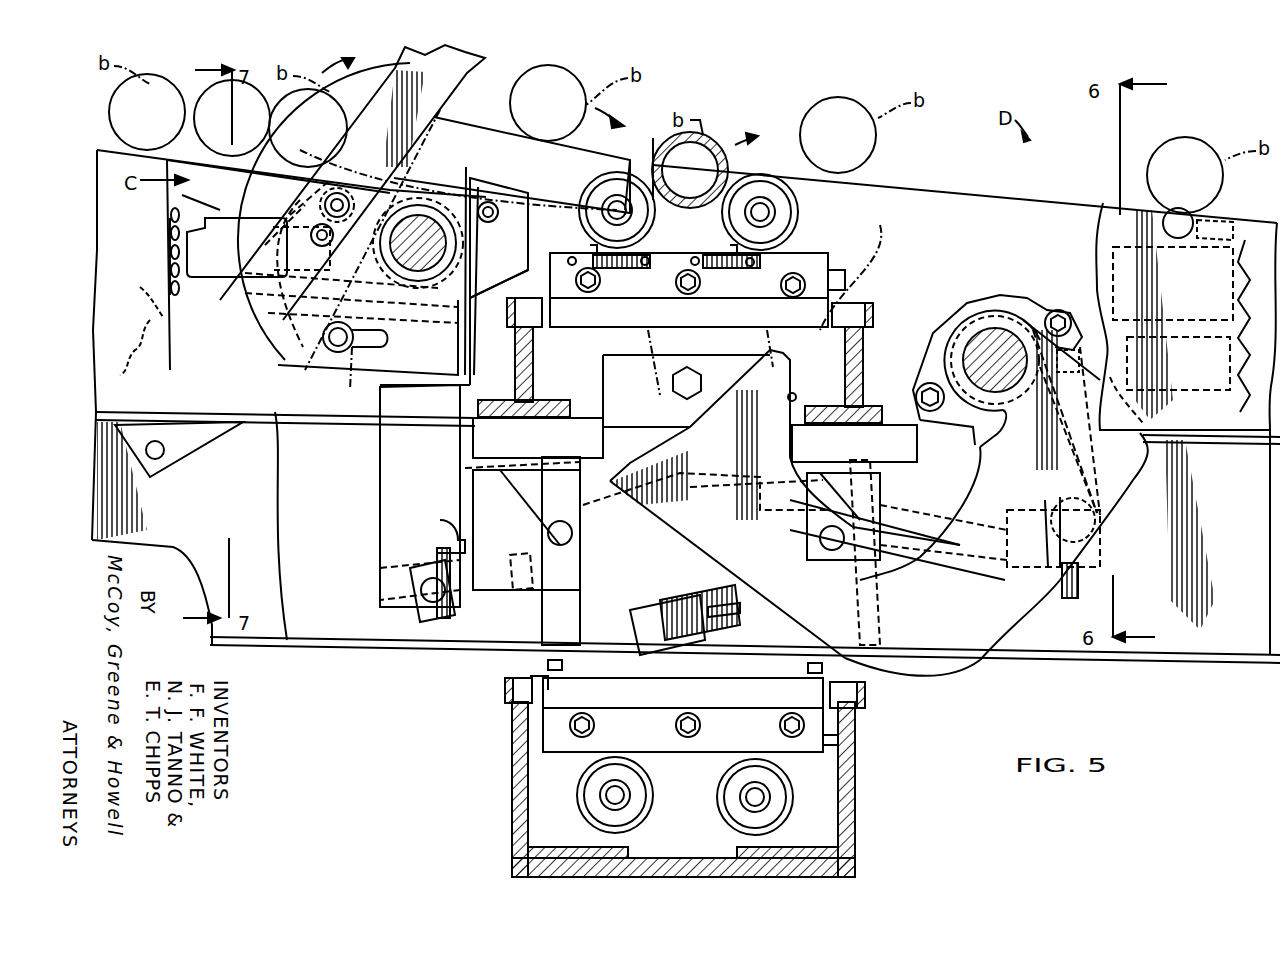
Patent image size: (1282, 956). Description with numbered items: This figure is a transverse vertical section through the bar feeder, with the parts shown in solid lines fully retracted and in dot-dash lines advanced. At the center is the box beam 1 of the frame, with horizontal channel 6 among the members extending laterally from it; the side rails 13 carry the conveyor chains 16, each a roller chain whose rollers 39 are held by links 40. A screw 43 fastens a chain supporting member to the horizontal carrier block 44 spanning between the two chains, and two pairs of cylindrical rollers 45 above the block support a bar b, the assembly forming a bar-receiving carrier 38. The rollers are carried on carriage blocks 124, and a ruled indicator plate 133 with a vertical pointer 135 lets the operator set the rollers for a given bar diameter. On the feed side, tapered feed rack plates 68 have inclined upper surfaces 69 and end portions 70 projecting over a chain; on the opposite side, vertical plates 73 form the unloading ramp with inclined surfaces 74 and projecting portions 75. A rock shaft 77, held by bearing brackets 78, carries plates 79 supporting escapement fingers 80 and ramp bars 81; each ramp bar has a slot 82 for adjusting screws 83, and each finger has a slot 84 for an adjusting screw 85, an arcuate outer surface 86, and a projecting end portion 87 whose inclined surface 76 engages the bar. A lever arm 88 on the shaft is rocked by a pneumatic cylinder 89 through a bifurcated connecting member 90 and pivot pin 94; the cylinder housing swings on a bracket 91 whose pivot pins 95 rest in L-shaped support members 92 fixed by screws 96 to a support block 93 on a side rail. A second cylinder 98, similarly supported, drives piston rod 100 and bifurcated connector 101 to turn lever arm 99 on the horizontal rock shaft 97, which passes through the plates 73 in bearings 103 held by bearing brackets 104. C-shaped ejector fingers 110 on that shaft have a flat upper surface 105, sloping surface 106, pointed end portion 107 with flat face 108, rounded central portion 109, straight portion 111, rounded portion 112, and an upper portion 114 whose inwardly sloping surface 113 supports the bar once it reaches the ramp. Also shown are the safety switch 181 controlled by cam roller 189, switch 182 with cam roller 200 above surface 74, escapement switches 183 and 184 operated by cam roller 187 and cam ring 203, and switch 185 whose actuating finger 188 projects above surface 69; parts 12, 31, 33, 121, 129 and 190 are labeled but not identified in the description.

The box beam 1 is at (860, 865).
The horizontal channel 6 is at (355, 648).
The side wall 12 is at (528, 780).
The side rail 13 is at (535, 380).
The chain 16 is at (548, 290).
The block 31 is at (603, 372).
The nut 33 is at (670, 398).
The bar-receiving carrier 38 is at (825, 771).
The roller 39 is at (535, 675).
The link 40 is at (505, 690).
The screw 43 is at (810, 672).
The carrier block 44 is at (698, 320).
The roller 45 is at (605, 196).
The feed rack plate 68 is at (100, 245).
The upper surface 69 is at (180, 140).
The end portion 70 is at (525, 220).
The vertical plate 73 is at (1015, 210).
The upper surface 74 is at (925, 190).
The portion 75 is at (880, 285).
The inclined upper surface 76 is at (310, 138).
The rock shaft 77 is at (418, 243).
The bearing bracket 78 is at (482, 265).
The plate 79 is at (462, 338).
The escapement finger 80 is at (295, 362).
The ramp bar 81 is at (402, 148).
The elongated slot 82 is at (315, 270).
The adjusting screw 83 is at (335, 190).
The elongated slot 84 is at (368, 338).
The adjusting screw 85 is at (355, 378).
The arcuate outer surface 86 is at (255, 218).
The projecting end portion 87 is at (250, 186).
The lever arm 88 is at (200, 455).
The pneumatic cylinder 89 is at (615, 645).
The bifurcated connecting member 90 is at (462, 610).
The bracket 91 is at (540, 618).
The L-shaped support member 92 is at (905, 520).
The support block 93 is at (585, 432).
The pivot pin 94 is at (435, 565).
The pivot pin 95 is at (575, 535).
The screw 96 is at (538, 480).
The rock shaft 97 is at (1015, 415).
The pneumatic cylinder 98 is at (470, 498).
The lever arm 99 is at (1078, 462).
The piston rod 100 is at (910, 527).
The bifurcated connector 101 is at (1095, 555).
The bearing 103 is at (1040, 400).
The bearing bracket 104 is at (1015, 300).
The upper surface 105 is at (722, 402).
The sloping surface 106 is at (618, 480).
The pointed end portion 107 is at (598, 500).
The flat face 108 is at (685, 546).
The rounded central portion 109 is at (965, 668).
The ejector finger 110 is at (740, 168).
The straight portion 111 is at (980, 505).
The rounded portion 112 is at (1140, 453).
The inwardly sloping surface 113 is at (790, 397).
The upper portion 114 is at (870, 228).
The bolt 121 is at (592, 292).
The carriage block 124 is at (722, 752).
The stop 129 is at (838, 730).
The ruled indicator plate 133 is at (730, 262).
The vertical pointer 135 is at (590, 254).
The safety switch 181 is at (1225, 405).
The switch 182 is at (1113, 247).
The switch 183 is at (187, 247).
The switch 184 is at (200, 210).
The switch 185 is at (131, 331).
The cam roller 187 is at (372, 240).
The actuating finger 188 is at (380, 118).
The cam roller 189 is at (1068, 310).
The plate 190 is at (1232, 208).
The cam roller 200 is at (1125, 185).
The cam ring 203 is at (460, 188).